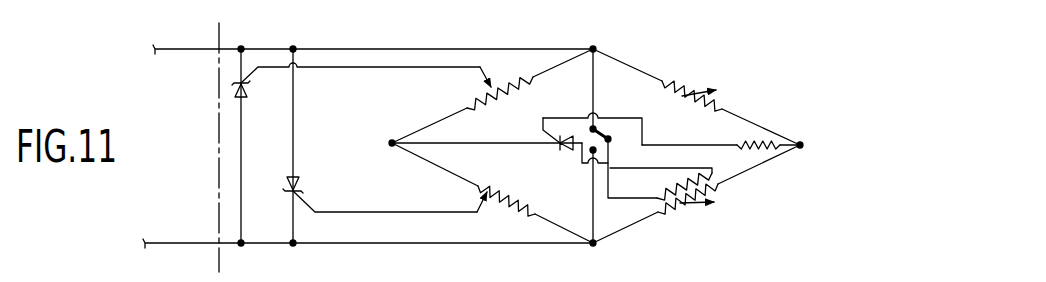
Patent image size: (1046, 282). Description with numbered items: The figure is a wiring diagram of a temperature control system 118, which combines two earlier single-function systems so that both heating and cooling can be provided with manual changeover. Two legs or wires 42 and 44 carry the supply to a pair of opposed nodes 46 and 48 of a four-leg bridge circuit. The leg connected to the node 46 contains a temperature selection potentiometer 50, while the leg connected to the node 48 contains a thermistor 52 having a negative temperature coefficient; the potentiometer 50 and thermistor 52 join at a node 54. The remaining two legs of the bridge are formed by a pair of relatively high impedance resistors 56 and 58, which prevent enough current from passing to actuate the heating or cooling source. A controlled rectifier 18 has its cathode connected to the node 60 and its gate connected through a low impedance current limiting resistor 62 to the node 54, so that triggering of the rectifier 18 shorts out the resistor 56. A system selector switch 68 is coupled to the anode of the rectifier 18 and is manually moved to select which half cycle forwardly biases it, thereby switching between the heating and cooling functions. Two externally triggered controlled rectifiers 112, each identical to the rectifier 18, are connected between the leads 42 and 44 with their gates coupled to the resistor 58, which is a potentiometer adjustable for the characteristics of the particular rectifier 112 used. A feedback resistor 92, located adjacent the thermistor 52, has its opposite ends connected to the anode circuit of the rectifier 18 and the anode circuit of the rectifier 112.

The controlled rectifier 18 is at (562, 152).
The leg or wire 42 is at (359, 48).
The leg or wire 44 is at (373, 244).
The node 46 is at (593, 49).
The node 48 is at (593, 243).
The temperature selection potentiometer 50 is at (688, 92).
The thermistor 52 is at (683, 199).
The node 54 is at (800, 145).
The resistor 56 is at (506, 91).
The resistor 58 is at (510, 200).
The node 60 is at (392, 143).
The current limiting resistor 62 is at (762, 150).
The system selector switch 68 is at (595, 132).
The feedback resistor 92 is at (677, 187).
The controlled rectifier 112 is at (247, 90).
The temperature control system 118 is at (467, 46).